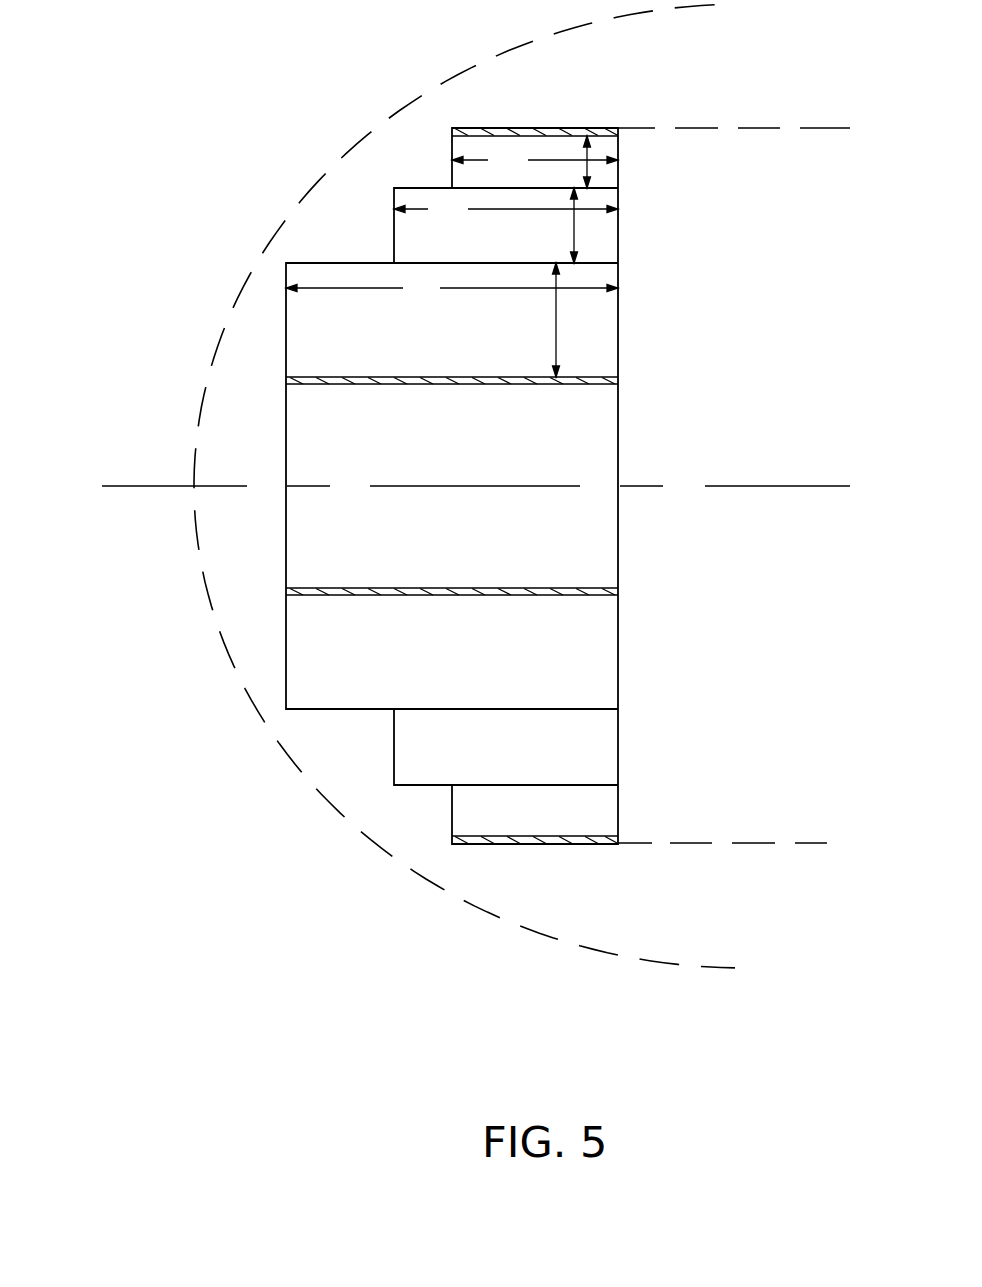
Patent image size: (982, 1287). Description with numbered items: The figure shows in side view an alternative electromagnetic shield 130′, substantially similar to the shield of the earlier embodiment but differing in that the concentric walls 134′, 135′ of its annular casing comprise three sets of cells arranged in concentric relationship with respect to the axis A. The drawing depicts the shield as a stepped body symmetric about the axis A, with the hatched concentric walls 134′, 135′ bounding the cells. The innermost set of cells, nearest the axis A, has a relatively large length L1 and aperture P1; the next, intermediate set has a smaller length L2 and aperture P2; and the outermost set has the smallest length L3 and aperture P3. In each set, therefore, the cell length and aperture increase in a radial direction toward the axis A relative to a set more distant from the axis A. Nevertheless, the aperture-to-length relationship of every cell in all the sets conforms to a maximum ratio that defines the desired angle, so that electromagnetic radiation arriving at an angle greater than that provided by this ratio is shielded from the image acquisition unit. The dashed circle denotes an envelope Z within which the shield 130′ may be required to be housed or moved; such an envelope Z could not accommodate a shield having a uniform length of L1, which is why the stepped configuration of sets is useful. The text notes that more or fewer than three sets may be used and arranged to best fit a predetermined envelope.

The electromagnetic shield 130′ is at (633, 105).
The concentric wall 134′ is at (506, 128).
The concentric wall 135′ is at (320, 590).
The axis A is at (772, 486).
The envelope Z is at (323, 800).
The length of innermost set of cells L1 is at (452, 294).
The length of intermediate set of cells L2 is at (506, 215).
The length of outermost set of cells L3 is at (535, 164).
The aperture of innermost set of cells P1 is at (541, 320).
The aperture of intermediate set of cells P2 is at (557, 225).
The aperture of outermost set of cells P3 is at (590, 162).